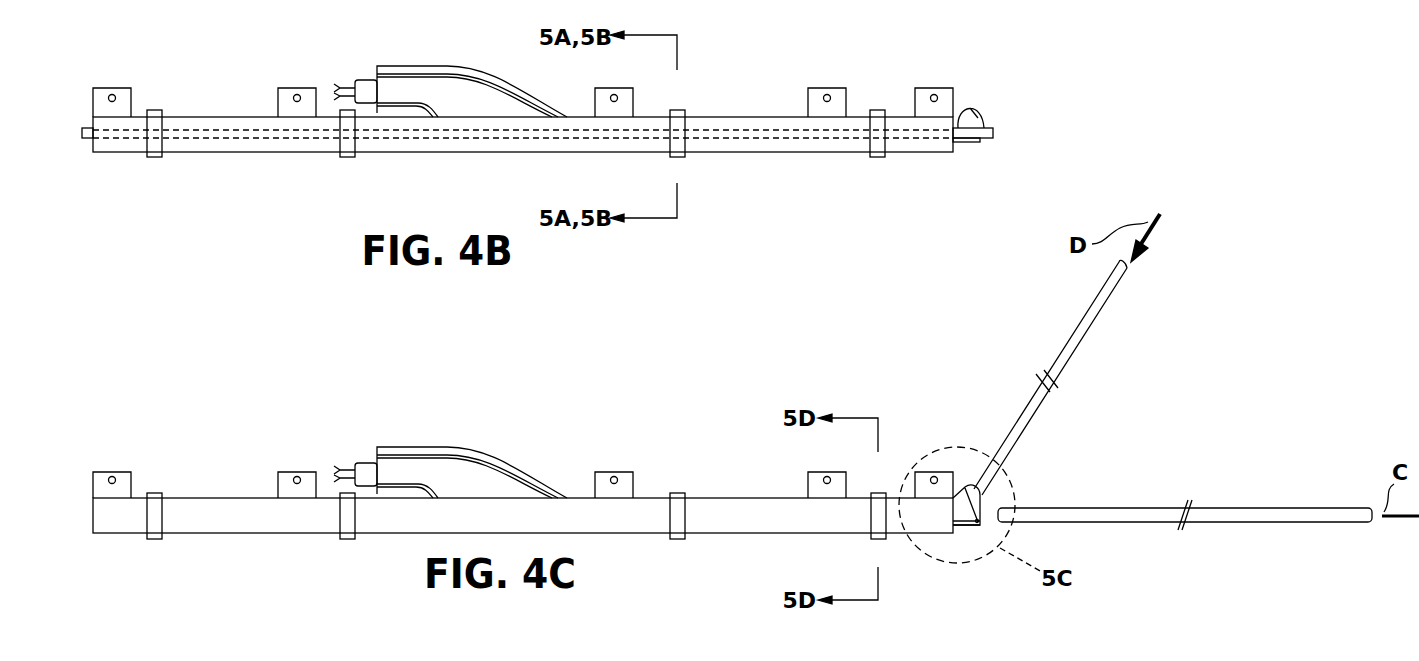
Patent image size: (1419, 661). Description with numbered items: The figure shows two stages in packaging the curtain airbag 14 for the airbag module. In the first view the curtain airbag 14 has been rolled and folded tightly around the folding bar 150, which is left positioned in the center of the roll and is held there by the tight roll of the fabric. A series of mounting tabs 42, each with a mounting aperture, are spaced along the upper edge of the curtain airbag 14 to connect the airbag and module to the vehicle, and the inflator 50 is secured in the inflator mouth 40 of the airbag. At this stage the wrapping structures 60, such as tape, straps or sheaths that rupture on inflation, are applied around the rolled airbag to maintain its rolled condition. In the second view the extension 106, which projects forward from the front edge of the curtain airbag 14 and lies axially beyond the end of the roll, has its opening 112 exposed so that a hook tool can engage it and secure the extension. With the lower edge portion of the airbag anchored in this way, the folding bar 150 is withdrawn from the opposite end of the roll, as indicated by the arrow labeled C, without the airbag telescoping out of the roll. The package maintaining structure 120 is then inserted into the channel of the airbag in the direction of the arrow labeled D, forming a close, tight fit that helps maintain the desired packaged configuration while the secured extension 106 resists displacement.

In FIG. 4B, the curtain airbag 14 is at (240, 148).
In FIG. 4C, the curtain airbag 14 is at (748, 513).
In FIG. 4B, the inflator mouth 40 is at (410, 90).
In FIG. 4C, the inflator mouth 40 is at (404, 470).
In FIG. 4B, the mounting tabs 42 is at (98, 94).
In FIG. 4C, the mounting tabs 42 is at (100, 478).
In FIG. 4B, the inflator 50 is at (363, 85).
In FIG. 4C, the inflator 50 is at (366, 470).
In FIG. 4B, the wrapping structures 60 is at (154, 148).
In FIG. 4C, the wrapping structures 60 is at (154, 528).
In FIG. 4C, the extension 106 is at (974, 487).
In FIG. 4C, the opening 112 is at (975, 526).
In FIG. 4C, the package maintaining structure 120 is at (1087, 325).
In FIG. 4B, the folding bar 150 is at (968, 150).
In FIG. 4C, the folding bar 150 is at (1233, 512).